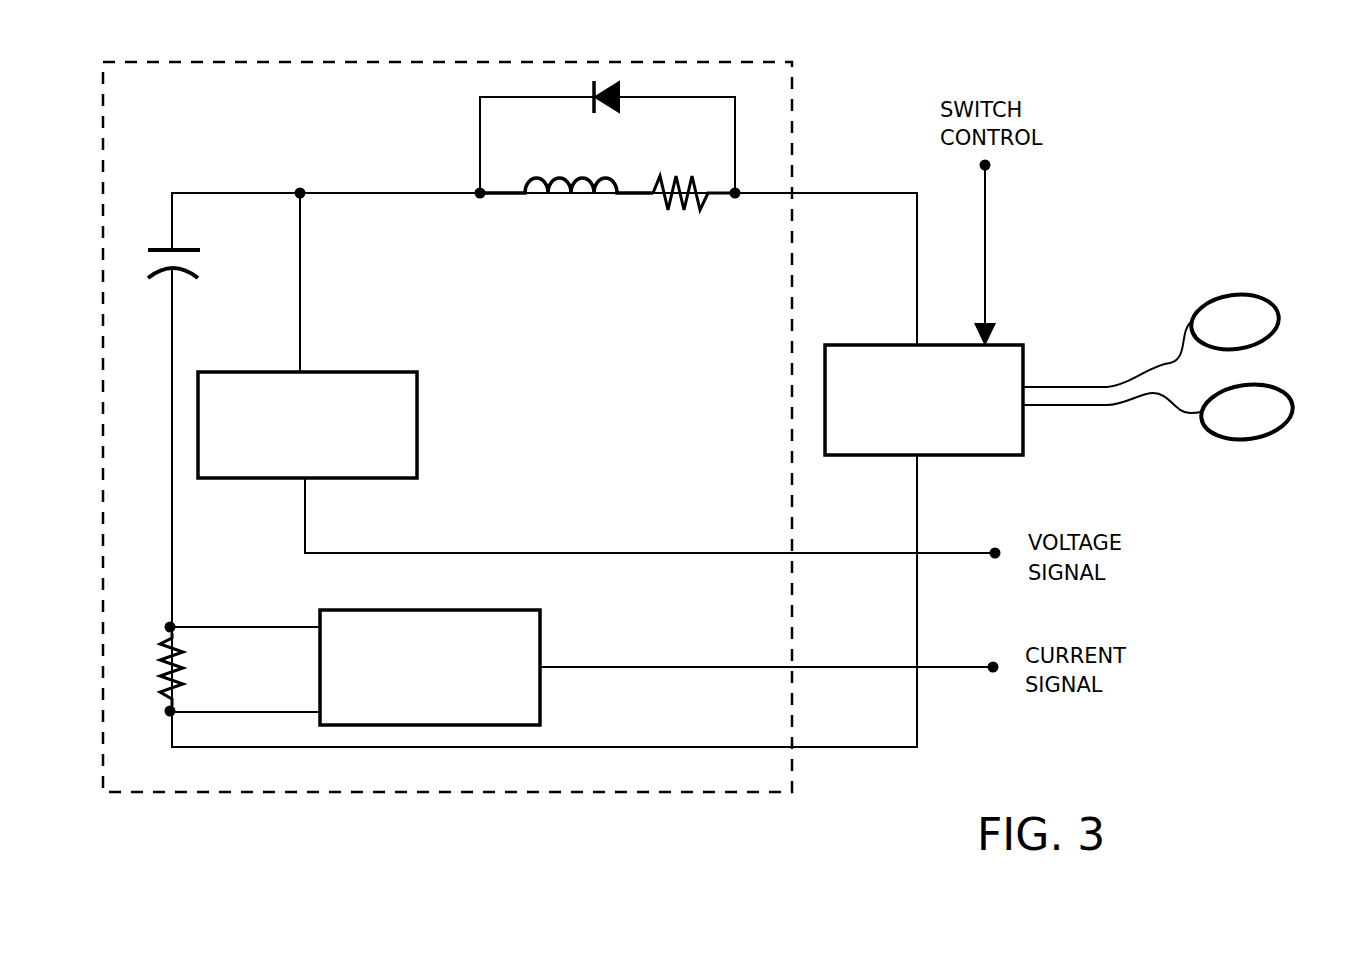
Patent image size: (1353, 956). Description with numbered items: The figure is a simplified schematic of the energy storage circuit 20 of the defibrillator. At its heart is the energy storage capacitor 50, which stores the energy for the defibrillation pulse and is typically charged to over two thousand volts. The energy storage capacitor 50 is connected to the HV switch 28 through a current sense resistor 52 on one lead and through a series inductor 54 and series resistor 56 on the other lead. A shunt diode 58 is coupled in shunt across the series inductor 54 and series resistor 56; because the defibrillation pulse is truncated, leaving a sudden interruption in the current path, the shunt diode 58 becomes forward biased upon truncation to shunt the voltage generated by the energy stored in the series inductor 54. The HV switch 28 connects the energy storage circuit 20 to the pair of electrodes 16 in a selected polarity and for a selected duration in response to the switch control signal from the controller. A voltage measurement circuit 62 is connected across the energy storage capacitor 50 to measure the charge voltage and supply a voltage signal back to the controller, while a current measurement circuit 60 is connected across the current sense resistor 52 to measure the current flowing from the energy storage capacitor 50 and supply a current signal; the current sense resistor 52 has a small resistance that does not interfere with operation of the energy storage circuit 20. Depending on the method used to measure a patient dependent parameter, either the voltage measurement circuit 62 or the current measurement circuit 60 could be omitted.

The energy storage circuit 20 is at (306, 122).
The energy storage capacitor 50 is at (190, 250).
The current sense resistor 52 is at (176, 695).
The series inductor 54 is at (568, 195).
The series resistor 56 is at (705, 200).
The shunt diode 58 is at (617, 108).
The current measurement circuit 60 is at (389, 610).
The voltage measurement circuit 62 is at (258, 372).
The HV switch 28 is at (877, 345).
The electrodes 16 is at (1310, 367).